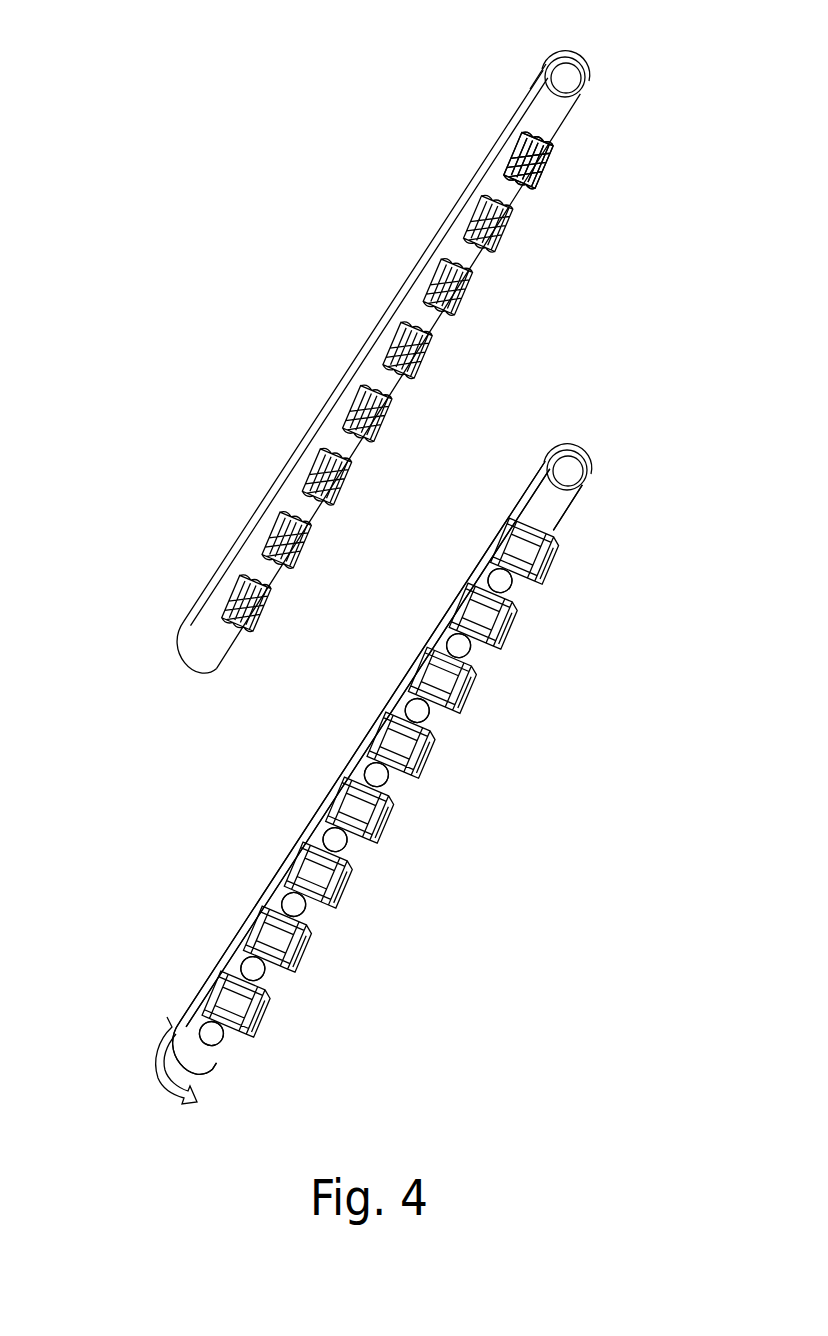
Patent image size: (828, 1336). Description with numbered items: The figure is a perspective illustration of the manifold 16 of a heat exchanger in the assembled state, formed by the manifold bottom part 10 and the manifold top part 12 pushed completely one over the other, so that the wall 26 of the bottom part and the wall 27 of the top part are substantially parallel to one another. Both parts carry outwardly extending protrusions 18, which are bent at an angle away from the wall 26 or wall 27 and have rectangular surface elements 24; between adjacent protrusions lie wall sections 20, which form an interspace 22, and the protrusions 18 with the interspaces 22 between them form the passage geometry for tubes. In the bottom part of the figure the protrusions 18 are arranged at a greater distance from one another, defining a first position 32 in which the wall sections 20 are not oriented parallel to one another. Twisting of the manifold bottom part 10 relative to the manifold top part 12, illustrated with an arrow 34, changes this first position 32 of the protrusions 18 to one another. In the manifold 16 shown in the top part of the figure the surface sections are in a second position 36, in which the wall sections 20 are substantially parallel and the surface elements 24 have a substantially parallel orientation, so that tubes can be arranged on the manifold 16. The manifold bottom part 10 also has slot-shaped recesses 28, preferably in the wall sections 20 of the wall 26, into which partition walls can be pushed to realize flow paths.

The manifold bottom part 10 is at (585, 490).
The manifold top part 12 is at (565, 437).
The manifold 16 is at (247, 268).
The outwardly extending protrusions 18 is at (525, 167).
The wall sections 20 is at (257, 568).
The interspace 22 is at (530, 193).
The rectangular surface elements 24 is at (393, 357).
The wall 26 is at (585, 68).
The wall 27 is at (532, 85).
The slot-shaped recesses 28 is at (506, 543).
The first position 32 is at (408, 812).
The arrow 34 is at (150, 1048).
The second position 36 is at (252, 627).